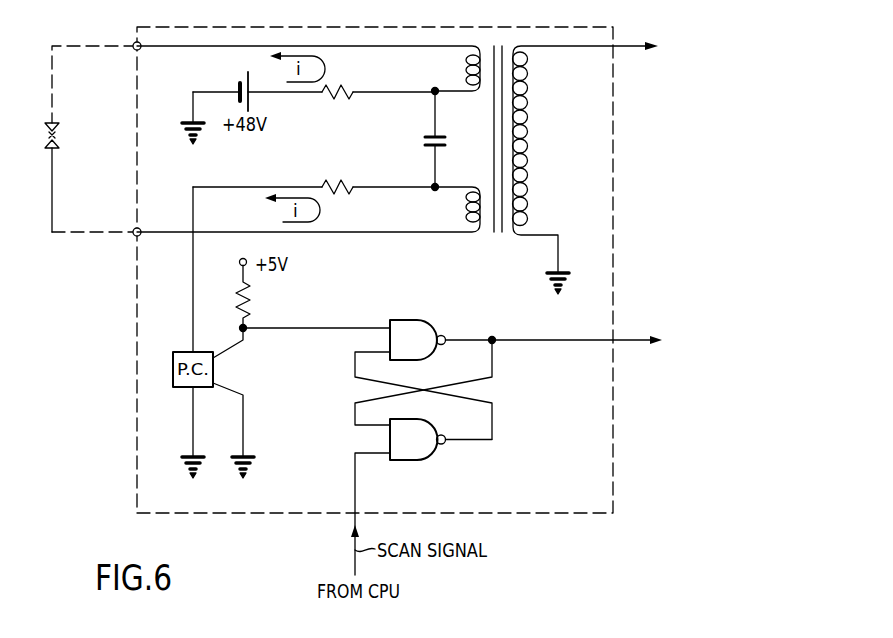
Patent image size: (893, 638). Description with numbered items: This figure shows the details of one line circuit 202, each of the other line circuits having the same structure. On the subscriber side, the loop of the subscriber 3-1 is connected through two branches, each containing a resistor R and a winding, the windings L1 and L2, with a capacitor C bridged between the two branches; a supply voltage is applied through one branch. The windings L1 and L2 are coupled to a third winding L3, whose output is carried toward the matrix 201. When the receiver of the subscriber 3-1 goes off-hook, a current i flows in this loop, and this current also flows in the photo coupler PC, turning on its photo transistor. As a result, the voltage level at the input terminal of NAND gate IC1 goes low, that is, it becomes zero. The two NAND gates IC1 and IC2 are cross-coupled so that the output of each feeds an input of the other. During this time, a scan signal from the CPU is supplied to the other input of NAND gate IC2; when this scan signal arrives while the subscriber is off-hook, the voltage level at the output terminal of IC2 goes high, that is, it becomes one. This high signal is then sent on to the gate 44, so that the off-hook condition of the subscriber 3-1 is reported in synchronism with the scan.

The subscriber 3-1 is at (91, 139).
The line circuit 202 is at (126, 320).
The matrix 201 is at (714, 45).
The gate 44 is at (627, 339).
The winding L1 is at (308, 68).
The winding L2 is at (308, 209).
The winding L3 is at (579, 170).
The resistor R is at (347, 87).
The capacitor C is at (426, 141).
The NAND gate IC1 is at (423, 327).
The NAND gate IC2 is at (423, 456).